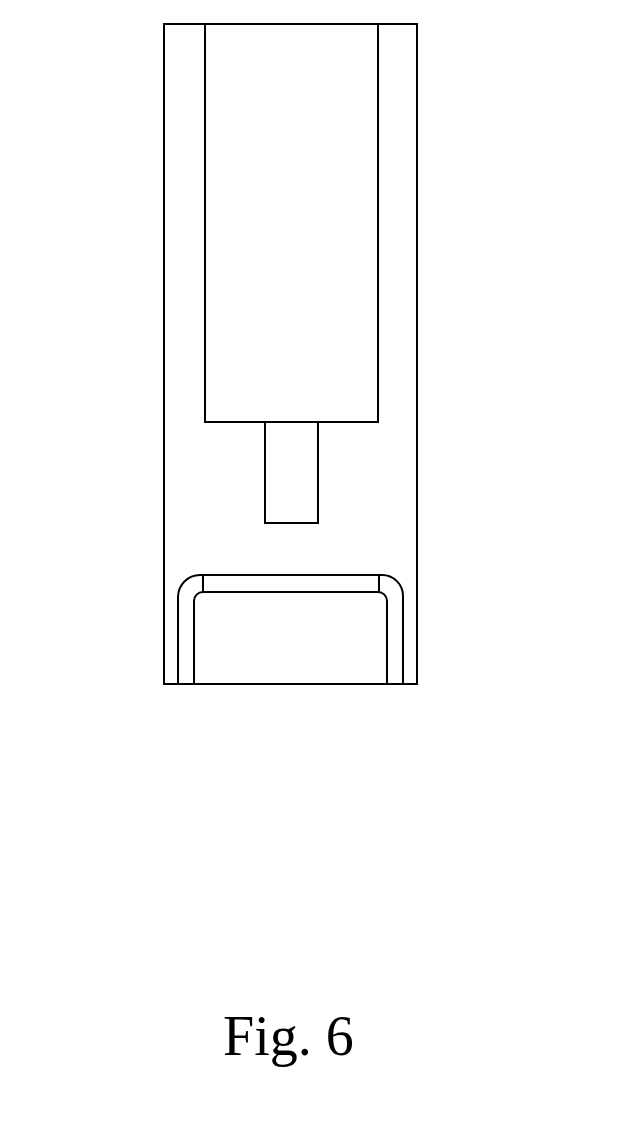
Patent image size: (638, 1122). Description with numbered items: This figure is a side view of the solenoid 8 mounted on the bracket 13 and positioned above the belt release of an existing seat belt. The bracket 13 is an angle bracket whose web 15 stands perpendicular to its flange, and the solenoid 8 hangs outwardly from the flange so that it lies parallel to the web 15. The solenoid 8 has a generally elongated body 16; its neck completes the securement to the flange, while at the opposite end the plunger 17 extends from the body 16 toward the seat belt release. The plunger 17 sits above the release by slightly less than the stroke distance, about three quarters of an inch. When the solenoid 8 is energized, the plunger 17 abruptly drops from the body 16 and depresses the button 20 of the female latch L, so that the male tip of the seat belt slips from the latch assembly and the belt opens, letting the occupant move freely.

The solenoid 8 is at (378, 144).
The bracket 13 is at (164, 383).
The web 15 is at (418, 264).
The body 16 is at (308, 235).
The plunger 17 is at (318, 472).
The button 20 is at (318, 582).
The female latch L is at (396, 641).